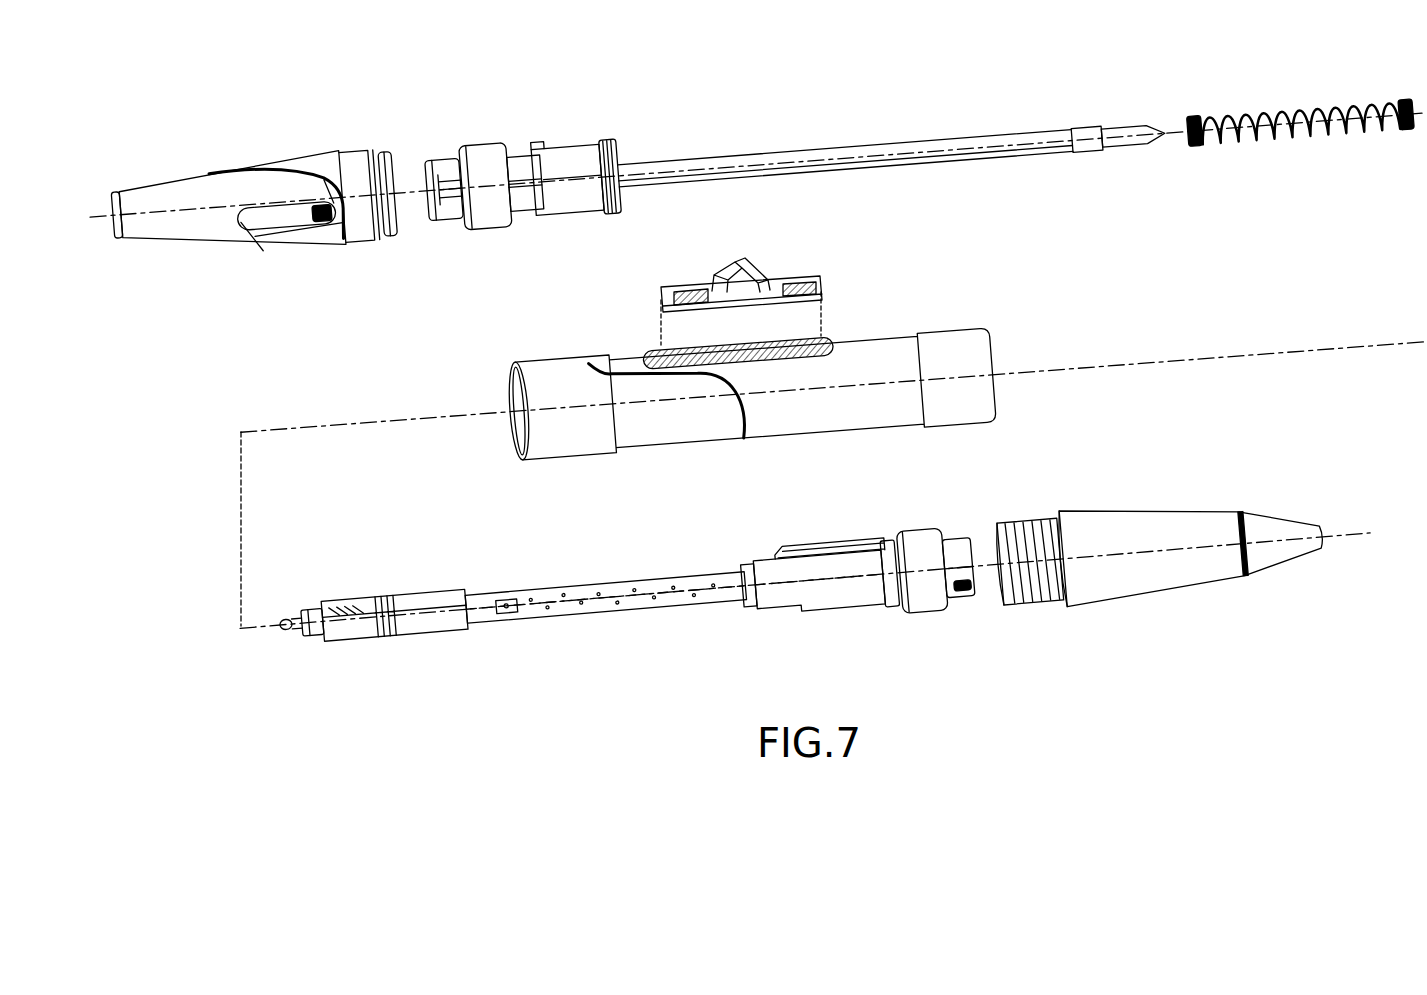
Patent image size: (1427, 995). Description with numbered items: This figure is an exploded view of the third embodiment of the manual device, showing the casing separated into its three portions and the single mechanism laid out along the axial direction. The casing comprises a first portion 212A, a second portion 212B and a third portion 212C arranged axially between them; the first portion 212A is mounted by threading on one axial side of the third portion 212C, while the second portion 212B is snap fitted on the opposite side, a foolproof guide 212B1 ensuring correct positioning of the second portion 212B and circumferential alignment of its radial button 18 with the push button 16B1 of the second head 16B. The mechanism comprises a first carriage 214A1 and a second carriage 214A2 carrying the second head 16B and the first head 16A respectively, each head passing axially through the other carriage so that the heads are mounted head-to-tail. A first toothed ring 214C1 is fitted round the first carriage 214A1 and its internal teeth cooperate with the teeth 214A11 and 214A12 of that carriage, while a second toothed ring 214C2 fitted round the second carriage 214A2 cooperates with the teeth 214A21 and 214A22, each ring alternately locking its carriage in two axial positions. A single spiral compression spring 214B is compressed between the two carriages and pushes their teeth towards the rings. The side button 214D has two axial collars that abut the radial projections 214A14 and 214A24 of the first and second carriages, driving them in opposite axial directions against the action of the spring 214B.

The second portion 212B is at (158, 186).
The radial button 18 is at (283, 216).
The foolproof guide 212B1 is at (364, 213).
The teeth 214A21 is at (443, 168).
The second toothed ring 214C2 is at (483, 150).
The second carriage 214A2 is at (520, 213).
The teeth 214A22 is at (533, 205).
The radial projection 214A24 is at (617, 147).
The first head 16A is at (918, 160).
The spring 214B is at (1298, 106).
The side button 214D is at (753, 280).
The third portion 212C is at (860, 424).
The second head 16B is at (357, 608).
The push button 16B1 is at (507, 600).
The first carriage 214A1 is at (853, 563).
The radial projection 214A14 is at (793, 548).
The teeth 214A12 is at (897, 590).
The first toothed ring 214C1 is at (928, 602).
The teeth 214A11 is at (982, 587).
The first portion 212A is at (1157, 583).